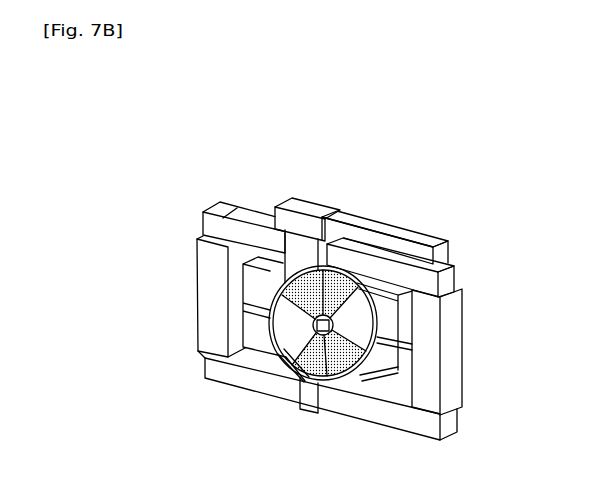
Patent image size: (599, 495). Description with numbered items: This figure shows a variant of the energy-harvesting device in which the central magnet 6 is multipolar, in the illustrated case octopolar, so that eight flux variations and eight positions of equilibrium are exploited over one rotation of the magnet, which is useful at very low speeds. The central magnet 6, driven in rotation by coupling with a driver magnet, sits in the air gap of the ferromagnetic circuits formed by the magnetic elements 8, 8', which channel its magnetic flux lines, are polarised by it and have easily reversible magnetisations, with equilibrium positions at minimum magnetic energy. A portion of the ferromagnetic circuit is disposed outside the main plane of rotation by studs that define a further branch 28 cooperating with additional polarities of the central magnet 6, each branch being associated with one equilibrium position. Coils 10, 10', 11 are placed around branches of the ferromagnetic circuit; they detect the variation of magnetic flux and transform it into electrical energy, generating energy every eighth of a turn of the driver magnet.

The central magnet 6 is at (302, 410).
The magnetic element 8 is at (413, 269).
The magnetic element 8' is at (244, 201).
The coil 10 is at (433, 349).
The coil 10' is at (225, 308).
The coil 11 is at (366, 212).
The branch 28 is at (307, 197).